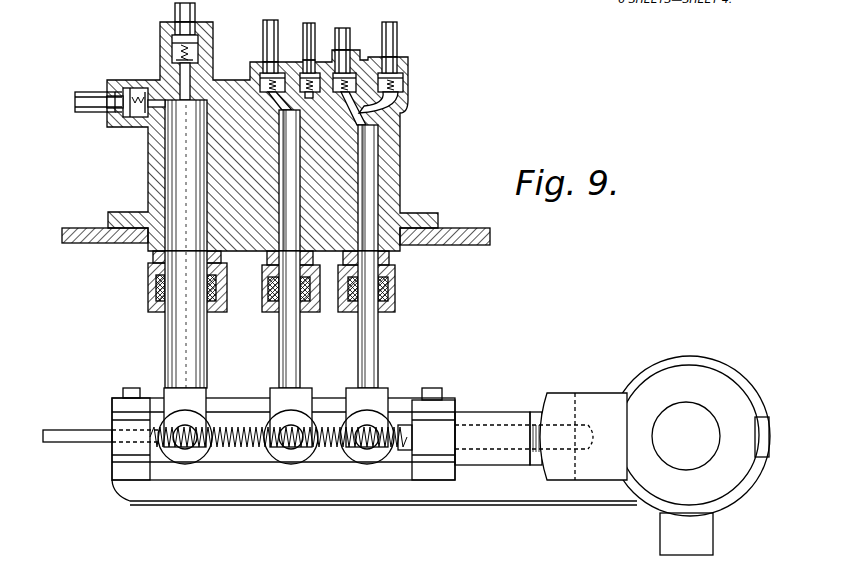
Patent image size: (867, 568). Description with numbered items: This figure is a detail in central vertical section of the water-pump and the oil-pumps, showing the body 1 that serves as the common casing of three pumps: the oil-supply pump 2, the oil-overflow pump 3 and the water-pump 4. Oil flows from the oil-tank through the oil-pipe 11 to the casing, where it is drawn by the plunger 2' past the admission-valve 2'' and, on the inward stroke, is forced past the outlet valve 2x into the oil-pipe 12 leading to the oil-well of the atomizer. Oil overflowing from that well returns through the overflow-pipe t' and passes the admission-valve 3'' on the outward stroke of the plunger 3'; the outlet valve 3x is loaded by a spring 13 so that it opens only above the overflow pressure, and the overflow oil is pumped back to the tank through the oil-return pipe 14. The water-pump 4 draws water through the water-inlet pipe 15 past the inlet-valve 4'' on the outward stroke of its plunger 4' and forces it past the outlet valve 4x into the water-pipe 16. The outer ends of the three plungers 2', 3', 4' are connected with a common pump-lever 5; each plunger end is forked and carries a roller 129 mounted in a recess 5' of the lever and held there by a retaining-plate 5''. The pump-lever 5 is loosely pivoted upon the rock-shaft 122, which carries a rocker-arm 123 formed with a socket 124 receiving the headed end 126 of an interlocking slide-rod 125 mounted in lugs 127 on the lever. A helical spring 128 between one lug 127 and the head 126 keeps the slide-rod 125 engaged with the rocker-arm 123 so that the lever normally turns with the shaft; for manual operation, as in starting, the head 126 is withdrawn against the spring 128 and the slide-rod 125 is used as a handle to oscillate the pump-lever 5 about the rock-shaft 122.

The valve body 1 is at (402, 155).
The oil-supply pump 2 is at (406, 188).
The oil-supply pump-plunger 2' is at (383, 256).
The admission-valve 2'' is at (418, 67).
The outlet valve 2x is at (408, 98).
The oil-overflow pump 3 is at (360, 180).
The oil-overflow pump-plunger 3' is at (307, 249).
The admission-valve 3'' is at (262, 67).
The outlet valve 3x is at (243, 132).
The water-pump 4 is at (162, 175).
The water-pump plunger 4' is at (203, 244).
The inlet-valve 4'' is at (111, 119).
The outlet valve 4x is at (170, 62).
The pump-lever 5 is at (374, 469).
The recess 5' is at (281, 473).
The retaining-plate 5'' is at (281, 324).
The oil-pipe 11 is at (397, 36).
The oil-pipe 12 is at (348, 34).
The spring 13 is at (302, 68).
The oil-return pipe 14 is at (312, 30).
The water-inlet pipe 15 is at (90, 92).
The water-pipe 16 is at (175, 14).
The overflow-pipe t' is at (261, 33).
The rock-shaft 122 is at (686, 436).
The rocker-arm 123 is at (622, 470).
The socket 124 is at (562, 425).
The interlocking slide-rod 125 is at (98, 444).
The headed end 126 is at (535, 414).
The lugs 127 is at (135, 455).
The helical spring 128 is at (240, 452).
The roller 129 is at (188, 457).